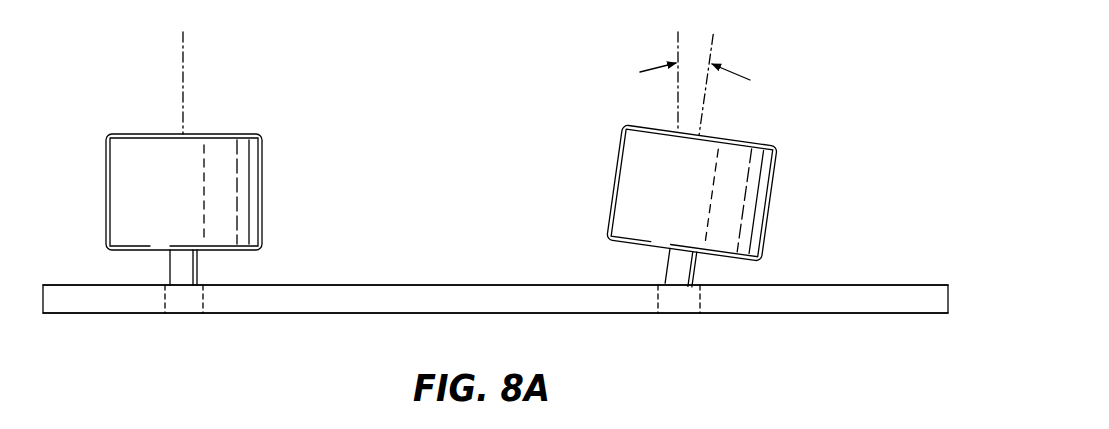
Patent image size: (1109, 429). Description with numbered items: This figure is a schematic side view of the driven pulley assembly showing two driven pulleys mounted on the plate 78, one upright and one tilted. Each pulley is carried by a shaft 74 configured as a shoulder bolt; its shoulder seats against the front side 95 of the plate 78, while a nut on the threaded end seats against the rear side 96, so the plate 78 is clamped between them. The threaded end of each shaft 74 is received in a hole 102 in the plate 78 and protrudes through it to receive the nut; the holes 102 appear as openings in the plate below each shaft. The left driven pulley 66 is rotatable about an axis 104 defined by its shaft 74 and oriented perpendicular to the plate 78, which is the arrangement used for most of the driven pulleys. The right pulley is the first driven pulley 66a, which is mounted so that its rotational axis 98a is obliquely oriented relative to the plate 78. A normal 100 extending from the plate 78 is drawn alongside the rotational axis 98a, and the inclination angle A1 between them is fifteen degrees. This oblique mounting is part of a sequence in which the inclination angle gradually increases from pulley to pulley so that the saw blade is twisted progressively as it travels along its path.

The driven pulley 66 is at (175, 162).
The first driven pulley 66a is at (598, 112).
The shaft 74 is at (198, 268).
The plate 78 is at (930, 278).
The front side of the plate 95 is at (802, 285).
The rear side of the plate 96 is at (802, 313).
The rotational axis of the first driven pulley 98a is at (715, 47).
The normal 100 is at (677, 45).
The hole 102 is at (165, 300).
The axis 104 is at (185, 98).
The inclination angle of the first driven pulley A1 is at (709, 77).